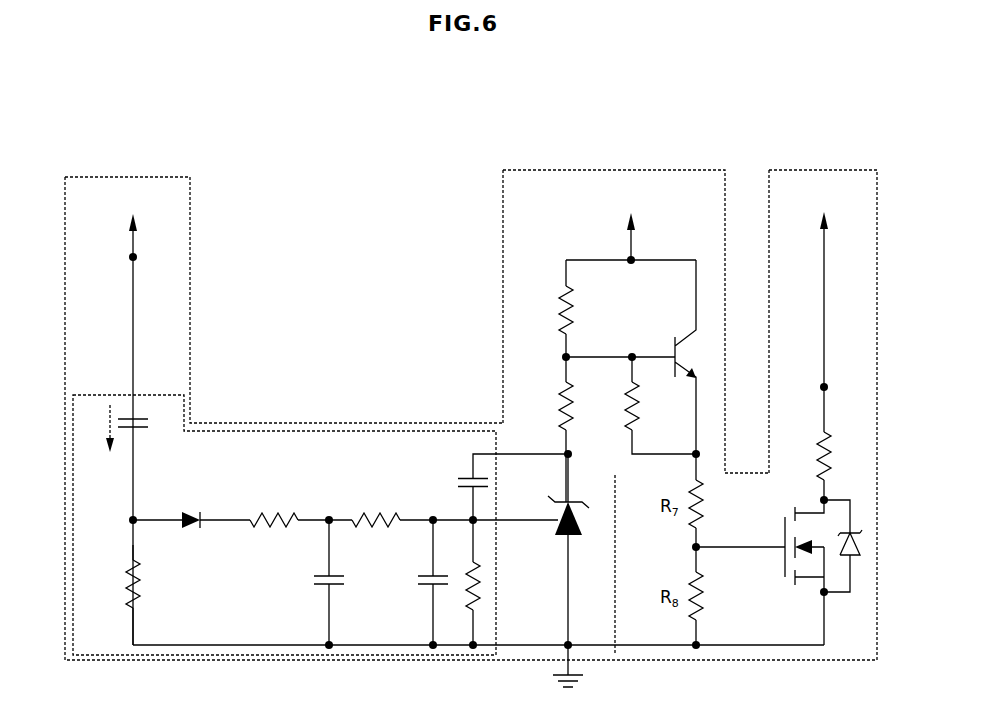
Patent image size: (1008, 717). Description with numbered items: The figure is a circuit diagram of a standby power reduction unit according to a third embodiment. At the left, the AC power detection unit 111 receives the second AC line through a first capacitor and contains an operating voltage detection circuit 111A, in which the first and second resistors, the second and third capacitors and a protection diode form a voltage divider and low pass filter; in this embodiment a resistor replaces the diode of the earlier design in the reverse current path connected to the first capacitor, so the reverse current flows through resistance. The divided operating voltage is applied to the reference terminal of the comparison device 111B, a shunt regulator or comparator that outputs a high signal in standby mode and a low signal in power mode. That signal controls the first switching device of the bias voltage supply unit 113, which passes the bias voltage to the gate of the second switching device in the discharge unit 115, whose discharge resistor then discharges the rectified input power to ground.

The AC power detection unit 111 is at (125, 177).
The operating voltage detection circuit 111A is at (293, 423).
The comparison device 111B is at (582, 521).
The bias voltage supply unit 113 is at (610, 170).
The discharge unit 115 is at (820, 170).